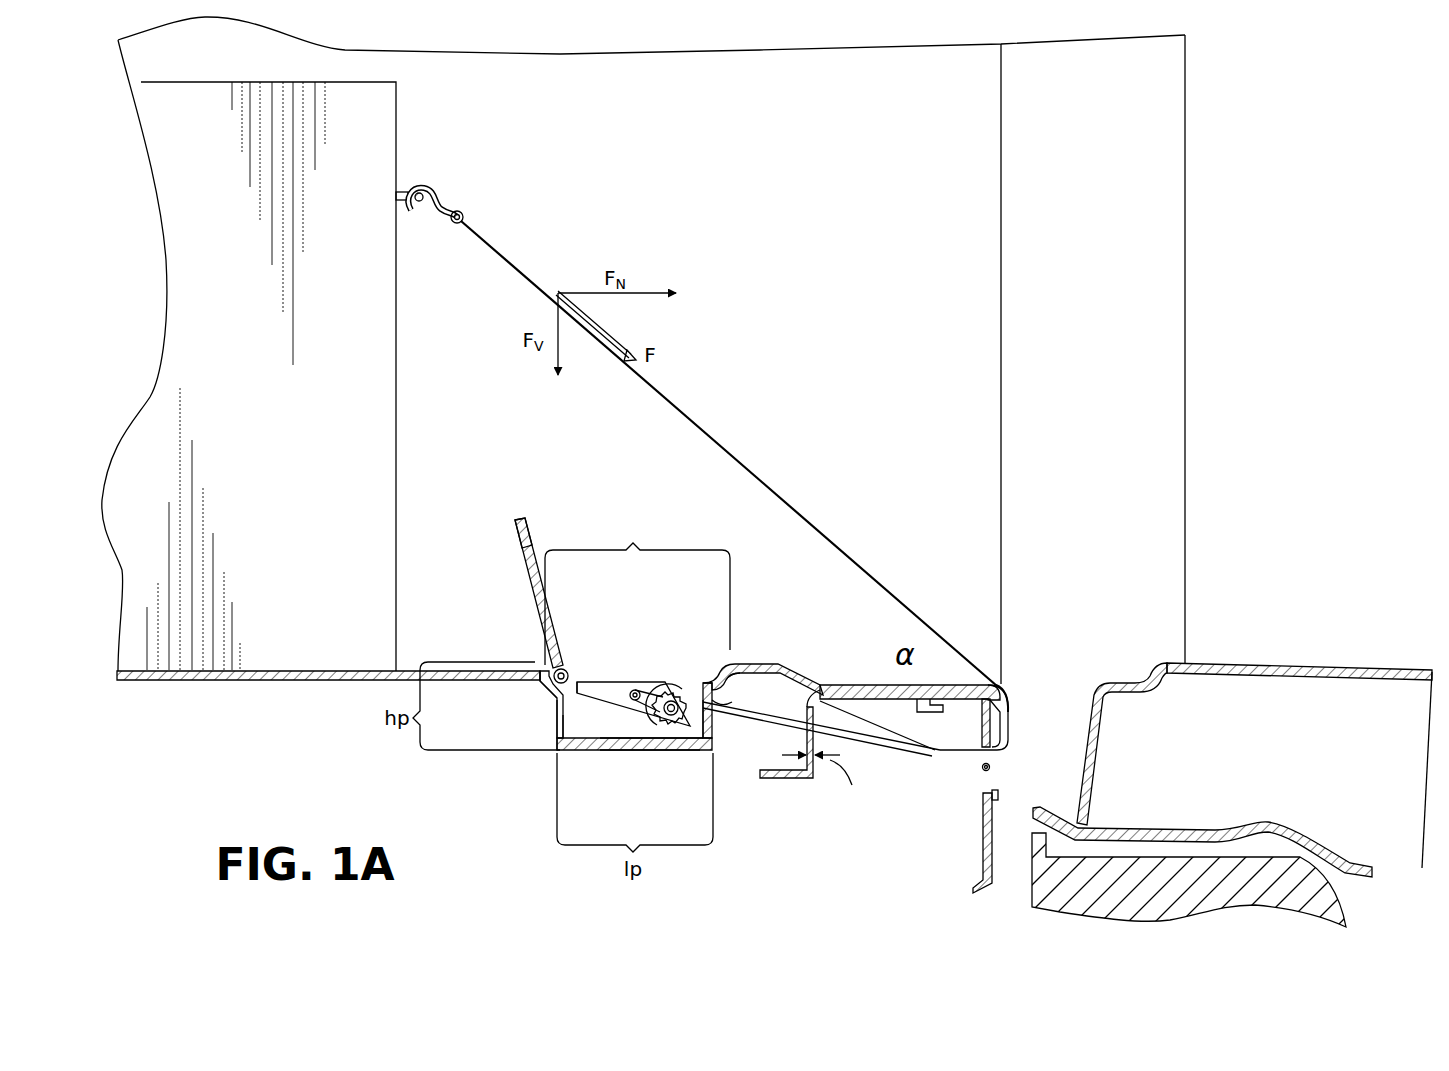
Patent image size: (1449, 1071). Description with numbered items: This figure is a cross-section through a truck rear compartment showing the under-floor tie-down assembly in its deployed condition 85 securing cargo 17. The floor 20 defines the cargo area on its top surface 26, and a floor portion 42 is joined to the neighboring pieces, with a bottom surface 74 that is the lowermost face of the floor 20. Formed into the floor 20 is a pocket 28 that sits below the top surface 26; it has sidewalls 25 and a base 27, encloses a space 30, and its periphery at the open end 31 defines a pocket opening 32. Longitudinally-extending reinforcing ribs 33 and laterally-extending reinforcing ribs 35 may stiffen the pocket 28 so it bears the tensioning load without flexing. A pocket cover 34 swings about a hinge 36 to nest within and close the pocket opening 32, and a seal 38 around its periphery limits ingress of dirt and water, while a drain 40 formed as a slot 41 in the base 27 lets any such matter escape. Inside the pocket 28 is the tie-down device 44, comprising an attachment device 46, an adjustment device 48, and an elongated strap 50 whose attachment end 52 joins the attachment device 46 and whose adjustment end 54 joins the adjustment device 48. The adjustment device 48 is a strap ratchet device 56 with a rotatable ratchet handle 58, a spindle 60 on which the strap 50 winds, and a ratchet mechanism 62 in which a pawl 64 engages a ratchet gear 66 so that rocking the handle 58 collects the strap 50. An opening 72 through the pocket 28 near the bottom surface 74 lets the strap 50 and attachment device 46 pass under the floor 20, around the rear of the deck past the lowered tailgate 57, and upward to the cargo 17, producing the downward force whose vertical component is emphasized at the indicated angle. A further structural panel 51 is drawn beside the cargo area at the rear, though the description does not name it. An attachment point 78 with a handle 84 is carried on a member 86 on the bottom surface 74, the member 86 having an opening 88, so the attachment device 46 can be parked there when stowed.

The cargo 17 is at (400, 150).
The floor 20 is at (281, 666).
The sidewalls 25 is at (556, 704).
The top surface 26 is at (320, 672).
The base 27 is at (575, 752).
The pocket 28 is at (722, 748).
The space 30 is at (574, 722).
The open end 31 is at (735, 660).
The pocket opening 32 is at (637, 591).
The longitudinally-extending reinforcing ribs 33 is at (650, 752).
The pocket cover 34 is at (530, 545).
The laterally-extending reinforcing ribs 35 is at (558, 716).
The hinge 36 is at (561, 668).
The seal 38 is at (517, 555).
The drain 40 is at (621, 735).
The slot 41 is at (635, 752).
The floor portion 42 is at (848, 684).
The tie-down device 44 is at (758, 490).
The attachment device 46 is at (445, 190).
The adjustment device 48 is at (696, 682).
The strap 50 is at (718, 437).
The vehicle panel 51 is at (1145, 470).
The attachment end 52 is at (464, 215).
The adjustment end 54 is at (714, 700).
The strap ratchet device 56 is at (600, 752).
The tailgate 57 is at (1305, 665).
The ratchet handle 58 is at (610, 688).
The spindle 60 is at (688, 727).
The ratchet mechanism 62 is at (675, 694).
The pawl 64 is at (636, 690).
The ratchet gear 66 is at (673, 740).
The opening 72 is at (712, 712).
The bottom surface 74 is at (840, 708).
The attachment point 78 is at (1000, 765).
The handle 84 is at (982, 770).
The deployed condition 85 is at (643, 344).
The member 86 is at (992, 855).
The opening 88 is at (995, 768).